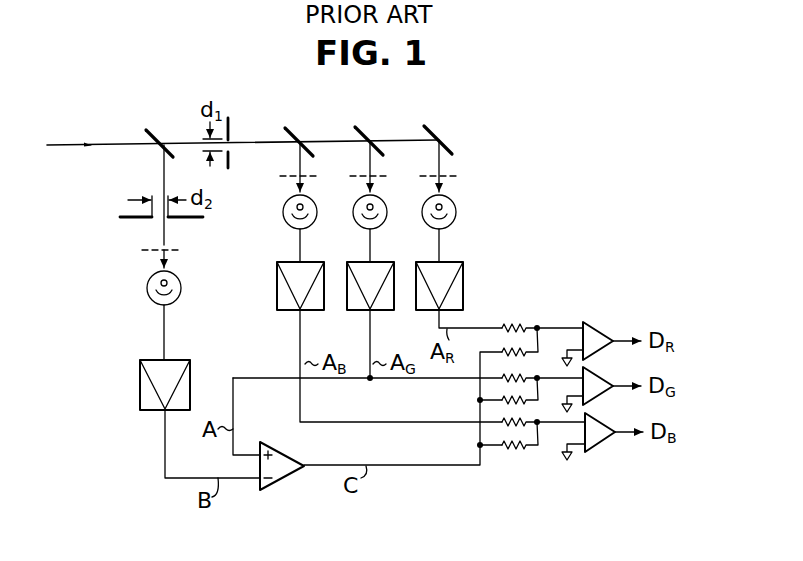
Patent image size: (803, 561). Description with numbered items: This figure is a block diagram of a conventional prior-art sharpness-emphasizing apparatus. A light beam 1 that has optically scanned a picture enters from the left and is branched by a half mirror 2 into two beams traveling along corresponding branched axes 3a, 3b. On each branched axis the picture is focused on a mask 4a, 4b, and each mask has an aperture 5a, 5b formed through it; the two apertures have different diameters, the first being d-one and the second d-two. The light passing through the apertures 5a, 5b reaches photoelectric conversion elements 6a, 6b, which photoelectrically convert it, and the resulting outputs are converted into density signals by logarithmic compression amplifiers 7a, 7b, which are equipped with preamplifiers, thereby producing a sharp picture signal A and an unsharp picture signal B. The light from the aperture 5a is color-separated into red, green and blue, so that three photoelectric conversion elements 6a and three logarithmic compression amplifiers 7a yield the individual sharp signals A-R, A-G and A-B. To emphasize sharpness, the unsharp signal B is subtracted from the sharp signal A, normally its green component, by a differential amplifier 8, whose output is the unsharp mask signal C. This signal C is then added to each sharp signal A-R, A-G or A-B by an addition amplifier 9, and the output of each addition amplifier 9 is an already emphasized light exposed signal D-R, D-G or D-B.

The light beam 1 is at (64, 144).
The half mirror 2 is at (147, 129).
The branched axis 3a is at (174, 138).
The branched axis 3b is at (158, 170).
The mask 4a is at (230, 129).
The mask 4b is at (192, 217).
The aperture 5a is at (232, 152).
The aperture 5b is at (155, 218).
The photoelectric conversion element 6a is at (316, 219).
The photoelectric conversion element 6b is at (181, 290).
The logarithmic compression amplifier 7a is at (318, 312).
The logarithmic compression amplifier 7b is at (190, 372).
The differential amplifier 8 is at (285, 482).
The addition amplifier 9 is at (592, 327).